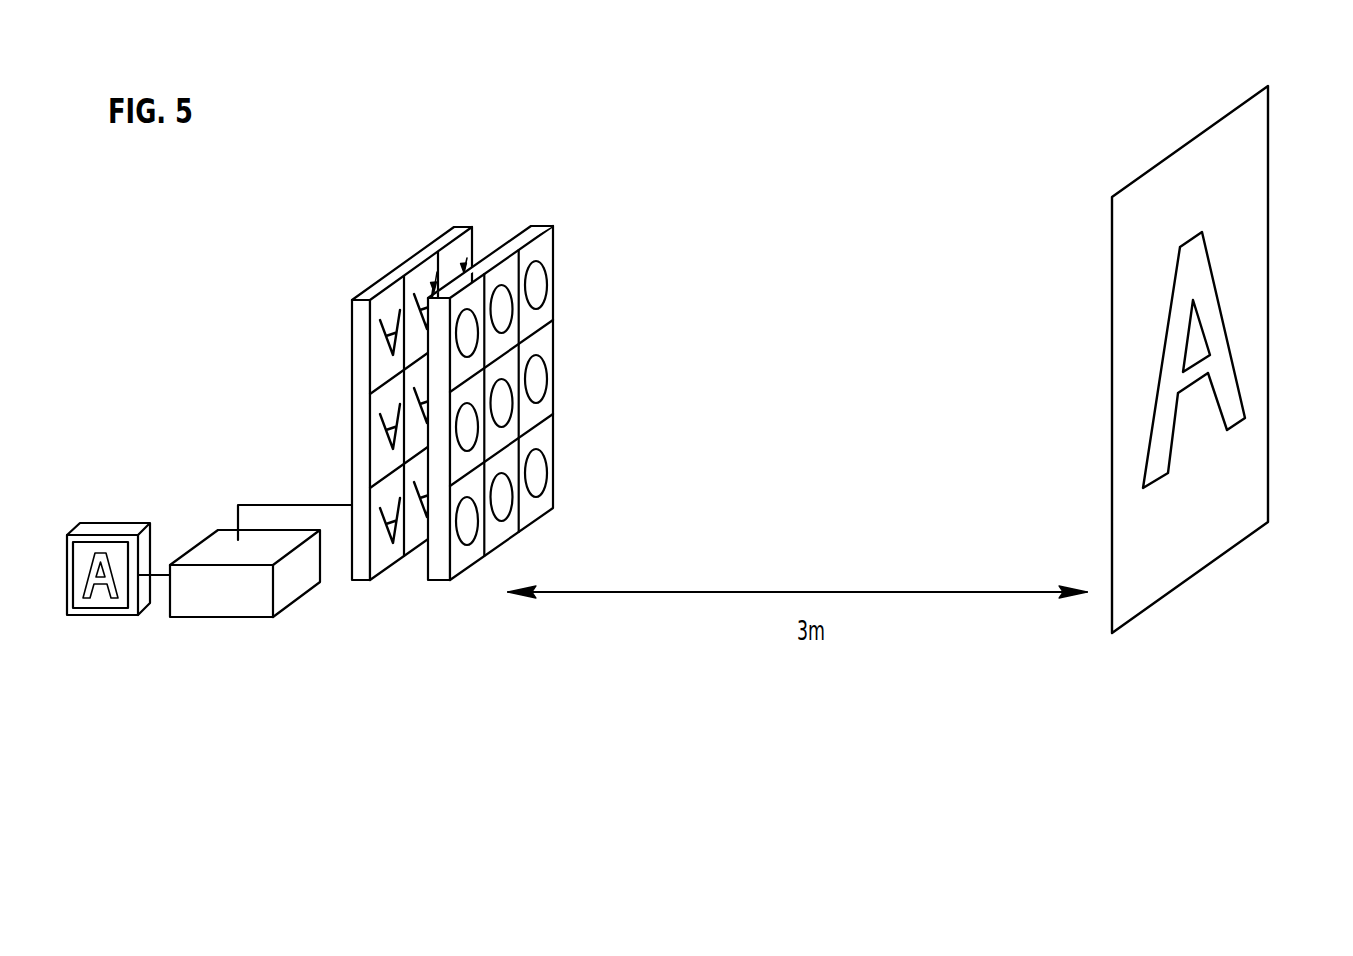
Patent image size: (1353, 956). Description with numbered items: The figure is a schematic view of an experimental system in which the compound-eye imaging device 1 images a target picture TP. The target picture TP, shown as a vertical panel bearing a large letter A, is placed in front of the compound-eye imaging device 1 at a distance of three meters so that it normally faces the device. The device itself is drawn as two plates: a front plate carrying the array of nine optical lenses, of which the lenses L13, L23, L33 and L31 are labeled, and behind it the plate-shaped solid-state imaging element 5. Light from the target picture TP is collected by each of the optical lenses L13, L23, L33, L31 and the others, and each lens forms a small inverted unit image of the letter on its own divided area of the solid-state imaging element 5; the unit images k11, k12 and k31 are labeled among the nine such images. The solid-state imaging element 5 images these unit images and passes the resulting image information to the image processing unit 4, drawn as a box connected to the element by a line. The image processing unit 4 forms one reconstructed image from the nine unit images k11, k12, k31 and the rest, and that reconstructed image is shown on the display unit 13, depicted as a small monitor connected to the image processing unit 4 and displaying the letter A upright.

The compound-eye imaging device 1 is at (464, 374).
The image processing unit 4 is at (221, 592).
The solid-state imaging element 5 is at (386, 421).
The display unit 13 is at (100, 614).
The target picture TP is at (1223, 530).
The optical lens L13 is at (536, 278).
The optical lens L23 is at (540, 380).
The optical lens L33 is at (538, 473).
The optical lens L31 is at (470, 530).
The unit image k11 is at (387, 303).
The unit image k12 is at (425, 285).
The unit image k31 is at (382, 547).